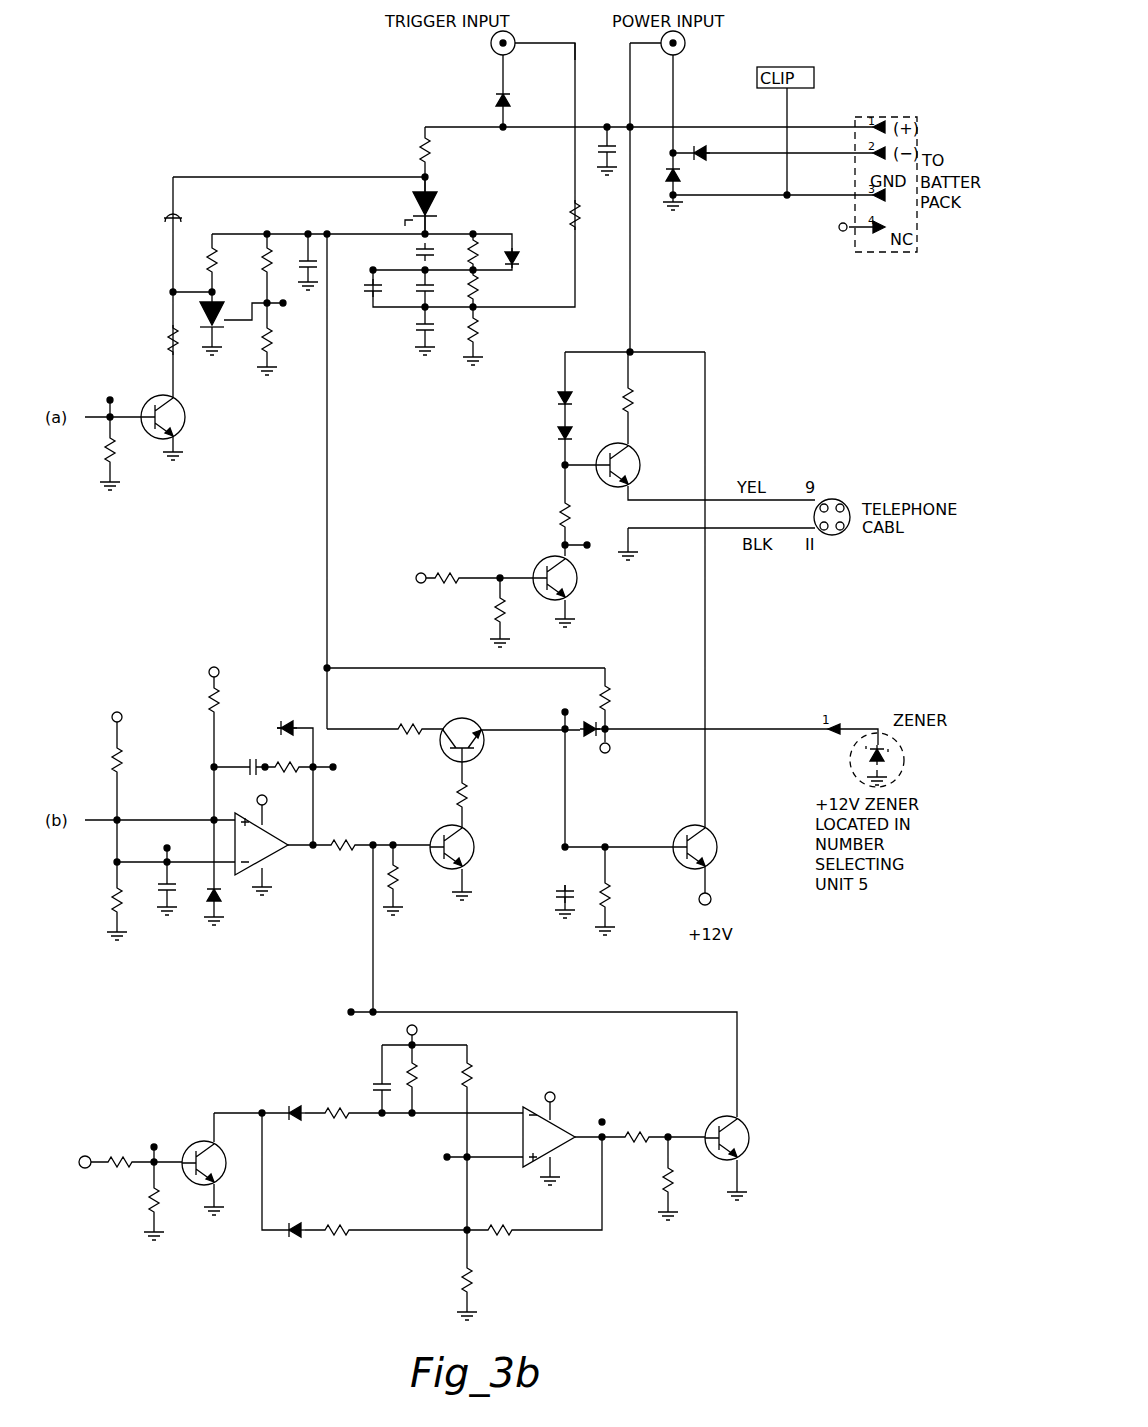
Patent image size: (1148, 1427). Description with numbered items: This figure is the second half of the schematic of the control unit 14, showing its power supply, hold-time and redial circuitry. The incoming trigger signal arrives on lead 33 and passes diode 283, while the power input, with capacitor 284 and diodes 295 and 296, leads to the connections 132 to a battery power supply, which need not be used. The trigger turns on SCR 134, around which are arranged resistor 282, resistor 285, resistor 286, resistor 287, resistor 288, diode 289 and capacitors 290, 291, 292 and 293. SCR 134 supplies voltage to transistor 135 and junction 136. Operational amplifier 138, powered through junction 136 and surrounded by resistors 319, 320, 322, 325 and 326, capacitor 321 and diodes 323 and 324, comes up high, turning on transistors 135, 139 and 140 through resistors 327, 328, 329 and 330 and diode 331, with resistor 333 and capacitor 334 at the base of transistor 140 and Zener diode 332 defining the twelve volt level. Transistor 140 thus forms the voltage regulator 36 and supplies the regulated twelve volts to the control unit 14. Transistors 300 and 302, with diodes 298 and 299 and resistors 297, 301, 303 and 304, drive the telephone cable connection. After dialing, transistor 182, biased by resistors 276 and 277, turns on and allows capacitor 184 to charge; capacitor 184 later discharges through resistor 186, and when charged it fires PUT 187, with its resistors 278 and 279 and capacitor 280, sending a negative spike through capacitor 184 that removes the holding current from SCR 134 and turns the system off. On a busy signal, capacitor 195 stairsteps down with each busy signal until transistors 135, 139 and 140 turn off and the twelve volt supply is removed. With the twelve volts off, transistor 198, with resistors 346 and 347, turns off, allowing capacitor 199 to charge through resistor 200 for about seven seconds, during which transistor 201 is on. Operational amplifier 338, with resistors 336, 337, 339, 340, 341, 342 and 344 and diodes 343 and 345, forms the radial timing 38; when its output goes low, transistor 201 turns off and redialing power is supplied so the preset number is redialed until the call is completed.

The lead 33 is at (575, 43).
The connections to a battery power supply 132 is at (884, 117).
The diode 283 is at (498, 102).
The capacitor 284 is at (608, 140).
The resistor 282 is at (422, 154).
The SCR 134 is at (462, 186).
The capacitor 290 is at (428, 251).
The resistor 286 is at (483, 249).
The diode 289 is at (518, 259).
The resistor 287 is at (479, 292).
The resistor 288 is at (485, 342).
The resistor 285 is at (577, 216).
The diode 295 is at (696, 150).
The diode 296 is at (676, 180).
The capacitor 184 is at (170, 217).
The resistor 186 is at (200, 264).
The PUT 187 is at (198, 317).
The resistor 277 is at (171, 340).
The resistor 278 is at (275, 208).
The resistor 279 is at (259, 336).
The capacitor 280 is at (300, 250).
The transistor 182 is at (182, 414).
The resistor 276 is at (110, 442).
The capacitor 293 is at (371, 295).
The capacitor 291 is at (414, 295).
The capacitor 292 is at (421, 340).
The diode 298 is at (568, 394).
The diode 299 is at (563, 432).
The resistor 297 is at (632, 406).
The transistor 300 is at (634, 460).
The resistor 301 is at (560, 520).
The resistor 303 is at (488, 546).
The transistor 302 is at (577, 588).
The resistor 304 is at (500, 614).
The junction 136 is at (124, 695).
The resistor 322 is at (218, 708).
The resistor 319 is at (142, 768).
The capacitor 195 is at (252, 764).
The diode 324 is at (302, 730).
The resistor 325 is at (298, 772).
The operational amplifier 138 is at (279, 854).
The capacitor 321 is at (162, 877).
The resistor 320 is at (112, 899).
The diode 323 is at (220, 900).
The resistor 326 is at (338, 837).
The resistor 329 is at (410, 720).
The transistor 135 is at (466, 718).
The resistor 330 is at (607, 695).
The diode 331 is at (587, 738).
The resistor 328 is at (464, 792).
The transistor 139 is at (470, 833).
The resistor 327 is at (397, 888).
The capacitor 334 is at (559, 894).
The resistor 333 is at (611, 898).
The transistor 140 is at (705, 834).
The Zener diode 332 is at (871, 742).
The voltage regulator 36 is at (738, 932).
The transistor 198 is at (190, 1142).
The resistor 347 is at (125, 1122).
The resistor 346 is at (155, 1190).
The diode 345 is at (294, 1104).
The resistor 344 is at (354, 1078).
The diode 343 is at (297, 1242).
The resistor 342 is at (334, 1232).
The capacitor 199 is at (379, 1072).
The resistor 200 is at (414, 1118).
The resistor 341 is at (468, 1076).
The operational amplifier 338 is at (523, 1106).
The resistor 337 is at (654, 1114).
The transistor 201 is at (742, 1126).
The resistor 336 is at (668, 1172).
The resistor 339 is at (504, 1234).
The resistor 340 is at (460, 1269).
The radial timing 38 is at (318, 1296).
The control unit 14 is at (740, 1268).